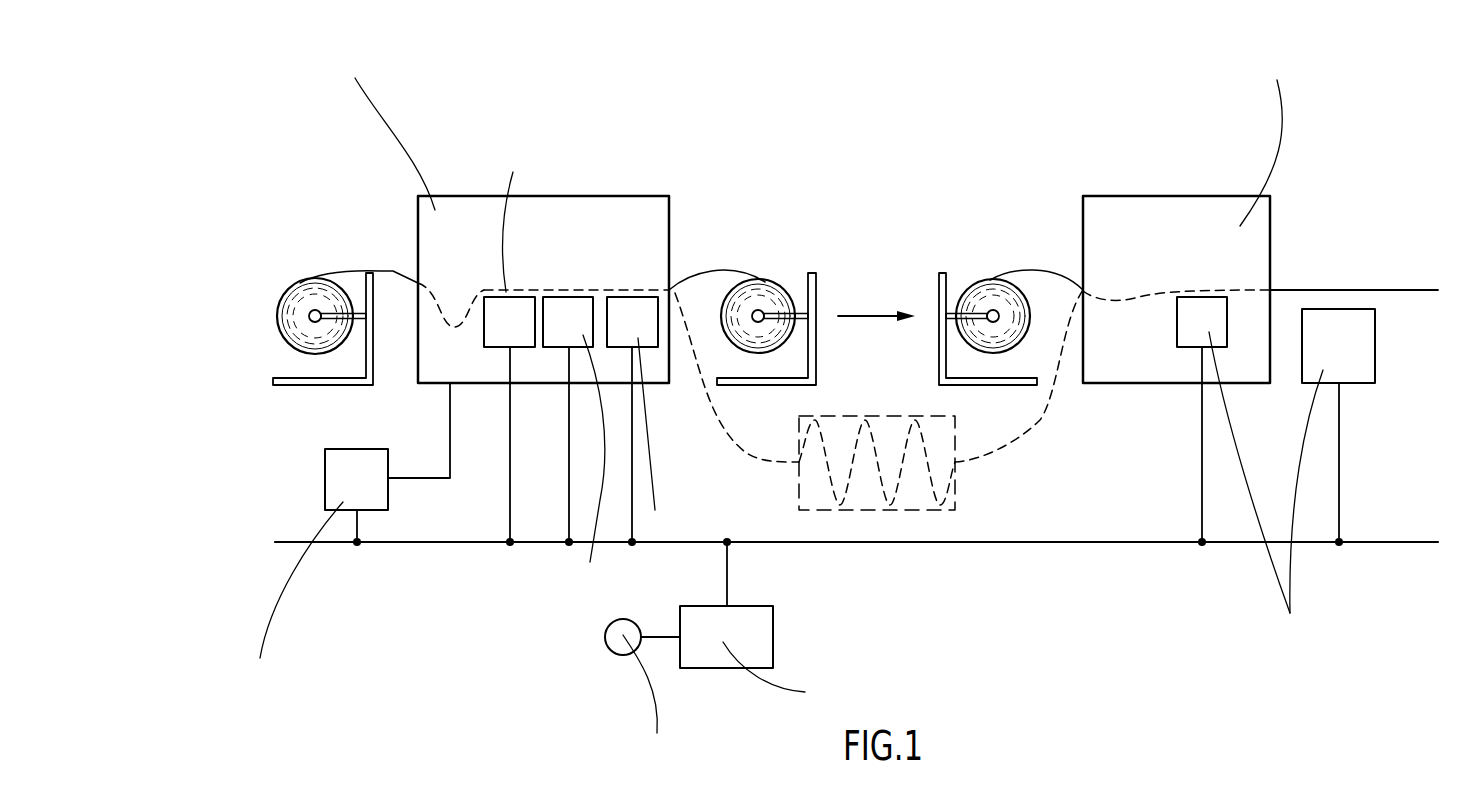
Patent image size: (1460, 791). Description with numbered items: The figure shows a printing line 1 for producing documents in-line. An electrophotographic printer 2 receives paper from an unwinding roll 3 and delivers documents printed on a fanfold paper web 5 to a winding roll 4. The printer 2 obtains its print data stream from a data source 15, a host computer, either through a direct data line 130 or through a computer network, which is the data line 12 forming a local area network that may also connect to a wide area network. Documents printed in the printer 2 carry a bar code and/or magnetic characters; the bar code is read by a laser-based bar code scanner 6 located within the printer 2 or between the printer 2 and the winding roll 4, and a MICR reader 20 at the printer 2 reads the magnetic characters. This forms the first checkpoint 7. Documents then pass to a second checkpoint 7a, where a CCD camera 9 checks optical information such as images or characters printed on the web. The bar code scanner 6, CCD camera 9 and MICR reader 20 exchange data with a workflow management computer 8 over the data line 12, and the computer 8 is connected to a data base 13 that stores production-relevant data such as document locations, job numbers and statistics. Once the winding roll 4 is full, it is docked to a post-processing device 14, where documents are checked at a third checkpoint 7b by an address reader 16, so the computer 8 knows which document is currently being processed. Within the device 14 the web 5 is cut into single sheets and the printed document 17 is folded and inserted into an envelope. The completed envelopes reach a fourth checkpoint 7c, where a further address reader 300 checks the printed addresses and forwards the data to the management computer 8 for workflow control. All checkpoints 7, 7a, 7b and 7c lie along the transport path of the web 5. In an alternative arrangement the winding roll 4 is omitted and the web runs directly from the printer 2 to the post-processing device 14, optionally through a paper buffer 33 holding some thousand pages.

The printing line 1 is at (862, 125).
The electrophotographic printer 2 is at (478, 196).
The unwinding roll 3 is at (298, 282).
The winding roll 4 is at (787, 290).
The fanfold paper web 5 is at (703, 268).
The bar code scanner 6 is at (572, 325).
The first checkpoint 7 is at (558, 268).
The second checkpoint 7a is at (624, 268).
The third checkpoint 7b is at (1200, 266).
The fourth checkpoint 7c is at (1343, 258).
The workflow management computer 8 is at (773, 628).
The CCD camera 9 is at (643, 348).
The data line 12 is at (1092, 545).
The data base 13 is at (605, 645).
The post-processing device 14 is at (1122, 196).
The data source 15 is at (325, 490).
The address reader 16 is at (1177, 327).
The printed document 17 is at (1410, 290).
The MICR reader 20 is at (522, 303).
The paper buffer 33 is at (955, 480).
The direct data line 130 is at (432, 478).
The address reader 300 is at (1347, 338).